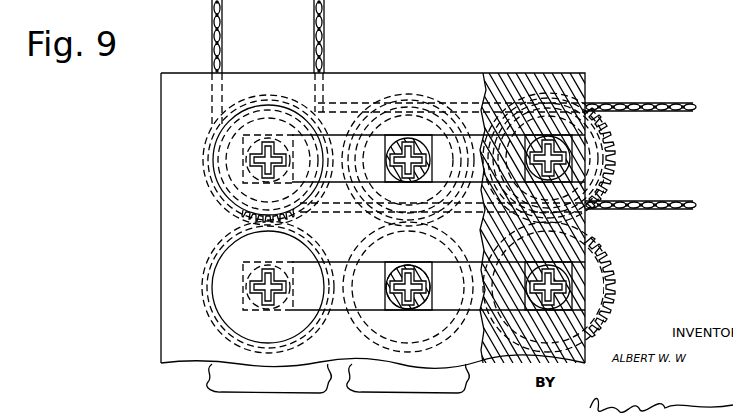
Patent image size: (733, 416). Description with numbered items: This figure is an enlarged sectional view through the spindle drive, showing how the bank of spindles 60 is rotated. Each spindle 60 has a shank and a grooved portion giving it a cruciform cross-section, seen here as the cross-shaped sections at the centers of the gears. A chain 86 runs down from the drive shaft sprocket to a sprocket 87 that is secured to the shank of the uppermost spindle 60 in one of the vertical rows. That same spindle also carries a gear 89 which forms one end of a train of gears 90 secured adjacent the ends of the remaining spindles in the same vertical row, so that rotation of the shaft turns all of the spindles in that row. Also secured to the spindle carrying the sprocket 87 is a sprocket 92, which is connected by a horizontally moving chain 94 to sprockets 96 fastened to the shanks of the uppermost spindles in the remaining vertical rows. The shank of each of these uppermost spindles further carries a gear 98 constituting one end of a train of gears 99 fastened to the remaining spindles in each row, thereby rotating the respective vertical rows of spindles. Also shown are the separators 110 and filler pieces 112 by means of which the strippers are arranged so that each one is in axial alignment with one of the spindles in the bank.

The spindle 60 is at (271, 146).
The chain 86 is at (315, 22).
The sprocket 87 is at (260, 112).
The sprocket 92 is at (268, 160).
The gear 89 is at (258, 212).
The train of gears 90 is at (230, 232).
The chain 94 is at (672, 201).
The sprockets 96 is at (510, 100).
The gear 98 is at (480, 104).
The train of gears 99 is at (623, 238).
The separators 110 is at (352, 233).
The filler pieces 112 is at (338, 118).